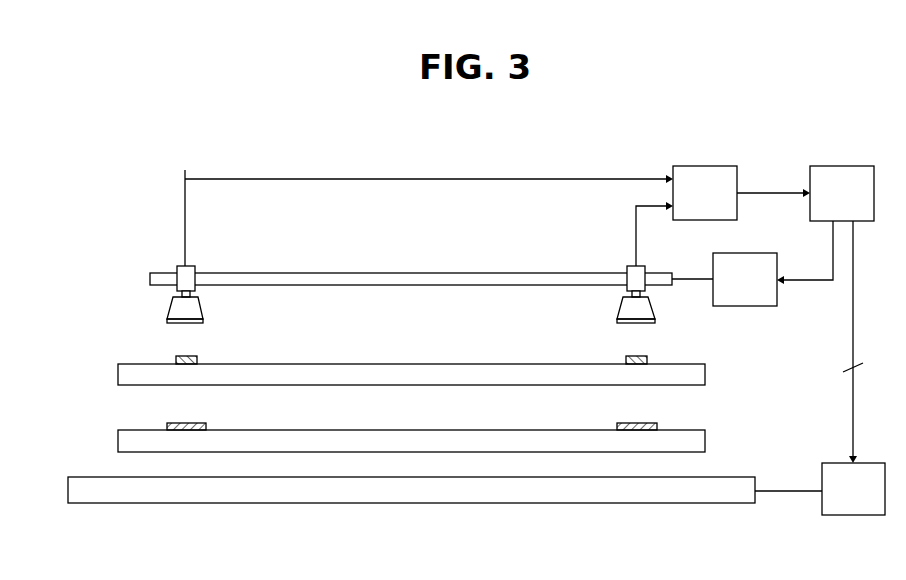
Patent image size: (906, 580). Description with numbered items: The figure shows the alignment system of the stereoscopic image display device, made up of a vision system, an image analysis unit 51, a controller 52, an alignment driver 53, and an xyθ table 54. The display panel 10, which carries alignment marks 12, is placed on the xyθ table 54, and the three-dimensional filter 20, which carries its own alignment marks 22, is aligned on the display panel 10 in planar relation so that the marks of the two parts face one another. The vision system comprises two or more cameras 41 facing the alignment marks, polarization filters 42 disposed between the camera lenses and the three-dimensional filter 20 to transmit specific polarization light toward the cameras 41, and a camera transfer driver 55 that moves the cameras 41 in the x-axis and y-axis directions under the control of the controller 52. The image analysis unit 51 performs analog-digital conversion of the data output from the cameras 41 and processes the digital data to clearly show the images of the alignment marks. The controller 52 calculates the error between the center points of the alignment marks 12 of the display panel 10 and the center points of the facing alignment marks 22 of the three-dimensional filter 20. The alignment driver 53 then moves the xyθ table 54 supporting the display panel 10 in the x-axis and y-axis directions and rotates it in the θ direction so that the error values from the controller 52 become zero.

The display panel 10 is at (700, 442).
The alignment marks 12 is at (648, 422).
The 3D filter 20 is at (705, 373).
The alignment marks 22 is at (626, 357).
The cameras 41 is at (187, 273).
The polarization filters 42 is at (203, 321).
The image analysis unit 51 is at (694, 204).
The controller 52 is at (831, 204).
The alignment driver 53 is at (842, 500).
The xyθ table 54 is at (566, 493).
The camera transfer driver 55 is at (734, 290).